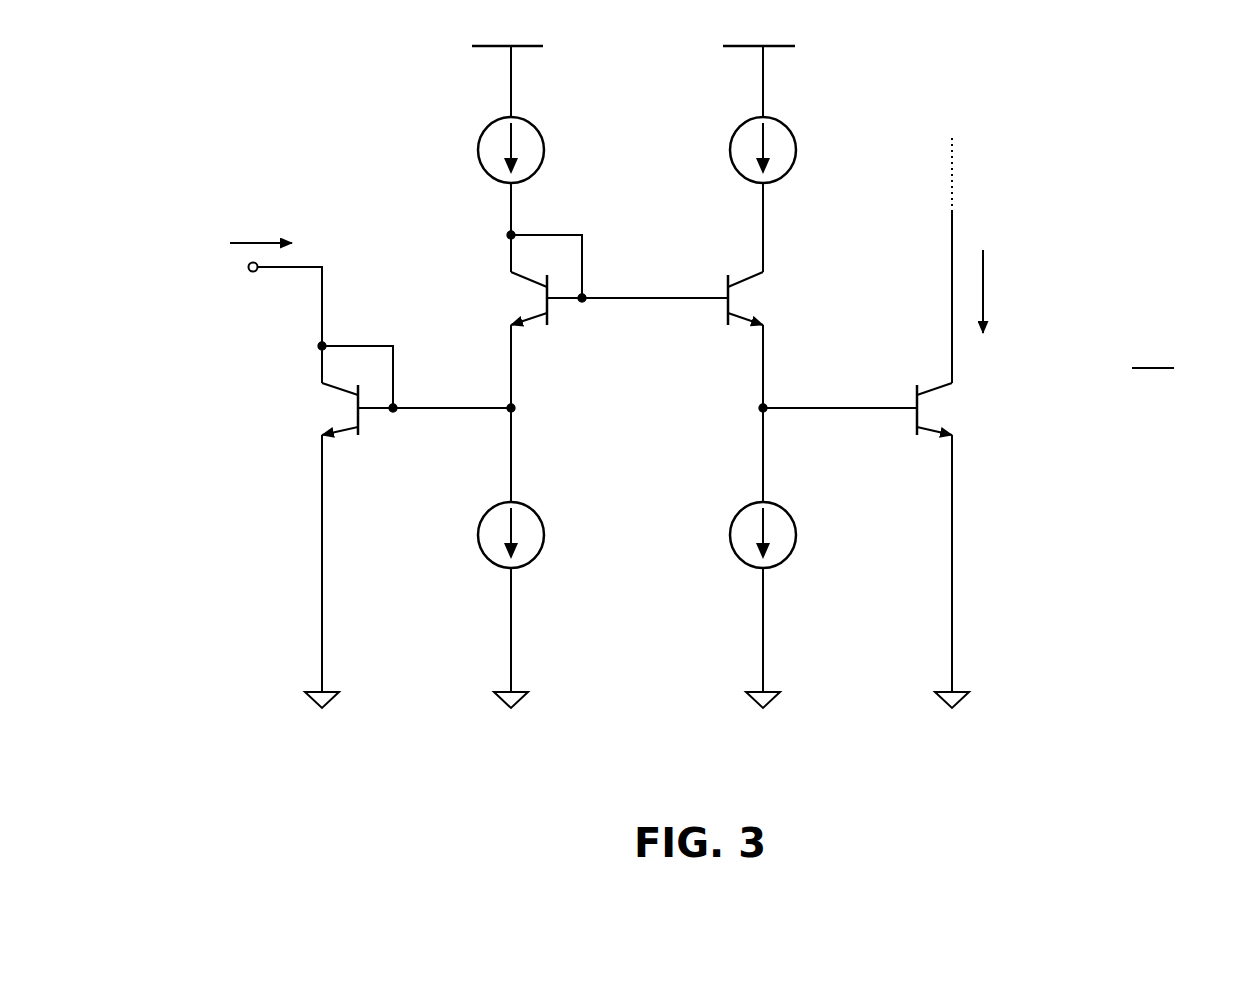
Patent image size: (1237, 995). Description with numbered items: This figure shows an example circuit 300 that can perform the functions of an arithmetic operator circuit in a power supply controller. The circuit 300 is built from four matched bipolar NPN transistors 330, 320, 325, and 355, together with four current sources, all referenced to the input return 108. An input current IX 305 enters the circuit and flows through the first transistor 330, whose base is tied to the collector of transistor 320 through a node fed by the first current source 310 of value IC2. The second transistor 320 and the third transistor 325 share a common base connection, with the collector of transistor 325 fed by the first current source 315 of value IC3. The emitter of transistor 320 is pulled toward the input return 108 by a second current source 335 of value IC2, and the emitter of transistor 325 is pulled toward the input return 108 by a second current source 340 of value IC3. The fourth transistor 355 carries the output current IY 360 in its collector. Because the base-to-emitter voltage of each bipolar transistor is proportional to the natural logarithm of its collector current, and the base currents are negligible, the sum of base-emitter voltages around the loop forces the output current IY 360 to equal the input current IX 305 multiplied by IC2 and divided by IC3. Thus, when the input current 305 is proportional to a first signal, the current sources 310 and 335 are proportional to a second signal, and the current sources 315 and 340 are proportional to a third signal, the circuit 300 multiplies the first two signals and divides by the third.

The circuit 300 is at (285, 86).
The input current Ix 305 is at (275, 228).
The current source IC2 310 is at (540, 119).
The current source IC3 315 is at (793, 119).
The bipolar NPN transistor 320 is at (519, 296).
The bipolar NPN transistor 325 is at (755, 296).
The bipolar NPN transistor 330 is at (330, 404).
The current source IC2 335 is at (540, 504).
The current source IC3 340 is at (798, 504).
The bipolar NPN transistor 355 is at (947, 396).
The output current IY 360 is at (1000, 276).
The input return 108 is at (337, 707).